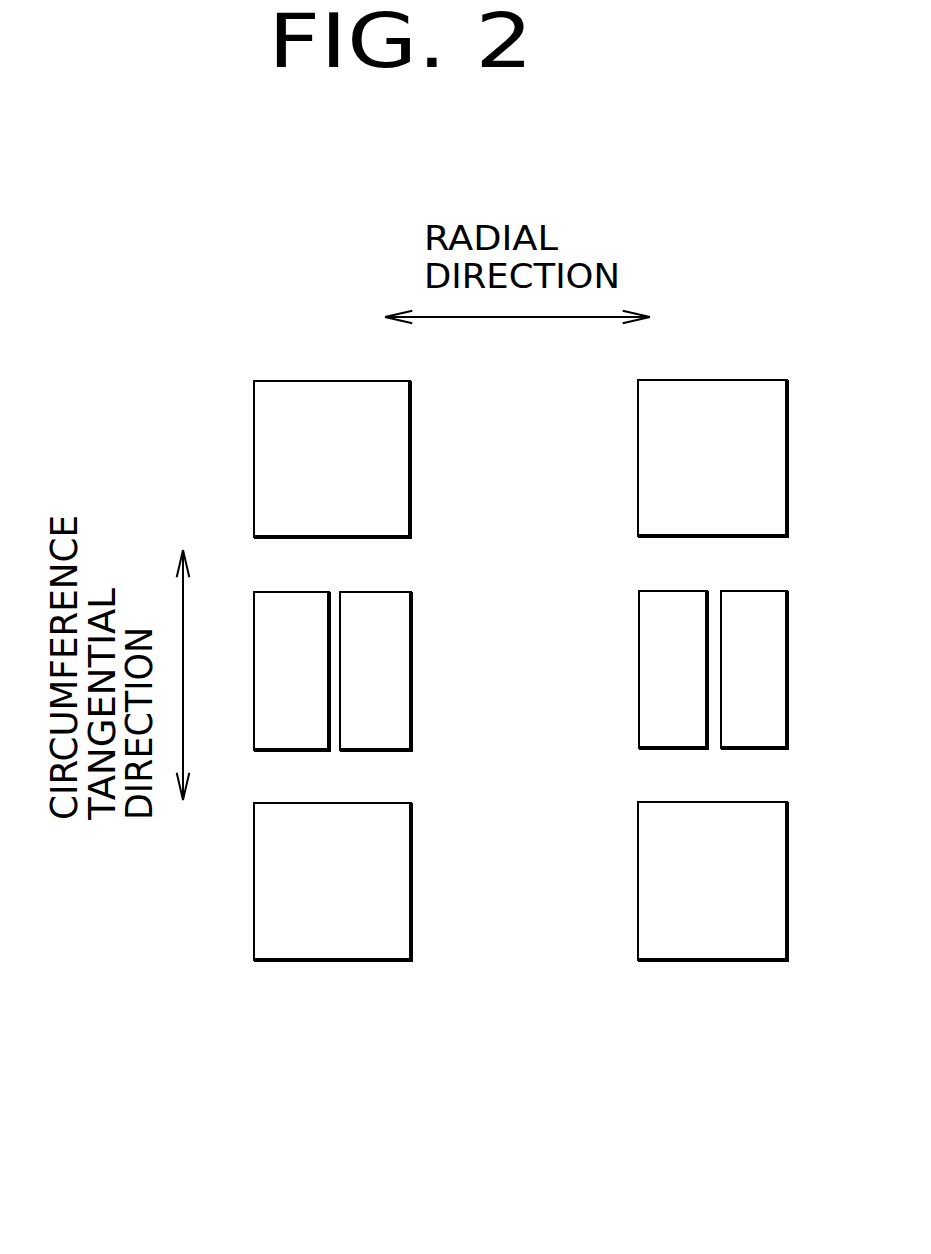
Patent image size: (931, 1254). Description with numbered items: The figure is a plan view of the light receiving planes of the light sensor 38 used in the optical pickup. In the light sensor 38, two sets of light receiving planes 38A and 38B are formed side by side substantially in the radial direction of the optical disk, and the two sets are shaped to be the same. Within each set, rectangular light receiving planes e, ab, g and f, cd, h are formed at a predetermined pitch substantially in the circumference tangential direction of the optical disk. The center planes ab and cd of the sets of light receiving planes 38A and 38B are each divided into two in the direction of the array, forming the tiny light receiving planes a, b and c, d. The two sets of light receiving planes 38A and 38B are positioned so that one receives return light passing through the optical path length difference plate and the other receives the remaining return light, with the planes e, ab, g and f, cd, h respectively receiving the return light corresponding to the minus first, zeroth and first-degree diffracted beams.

The light sensor 38 is at (378, 1035).
The first set of light receiving planes 38A is at (293, 335).
The second set of light receiving planes 38B is at (736, 330).